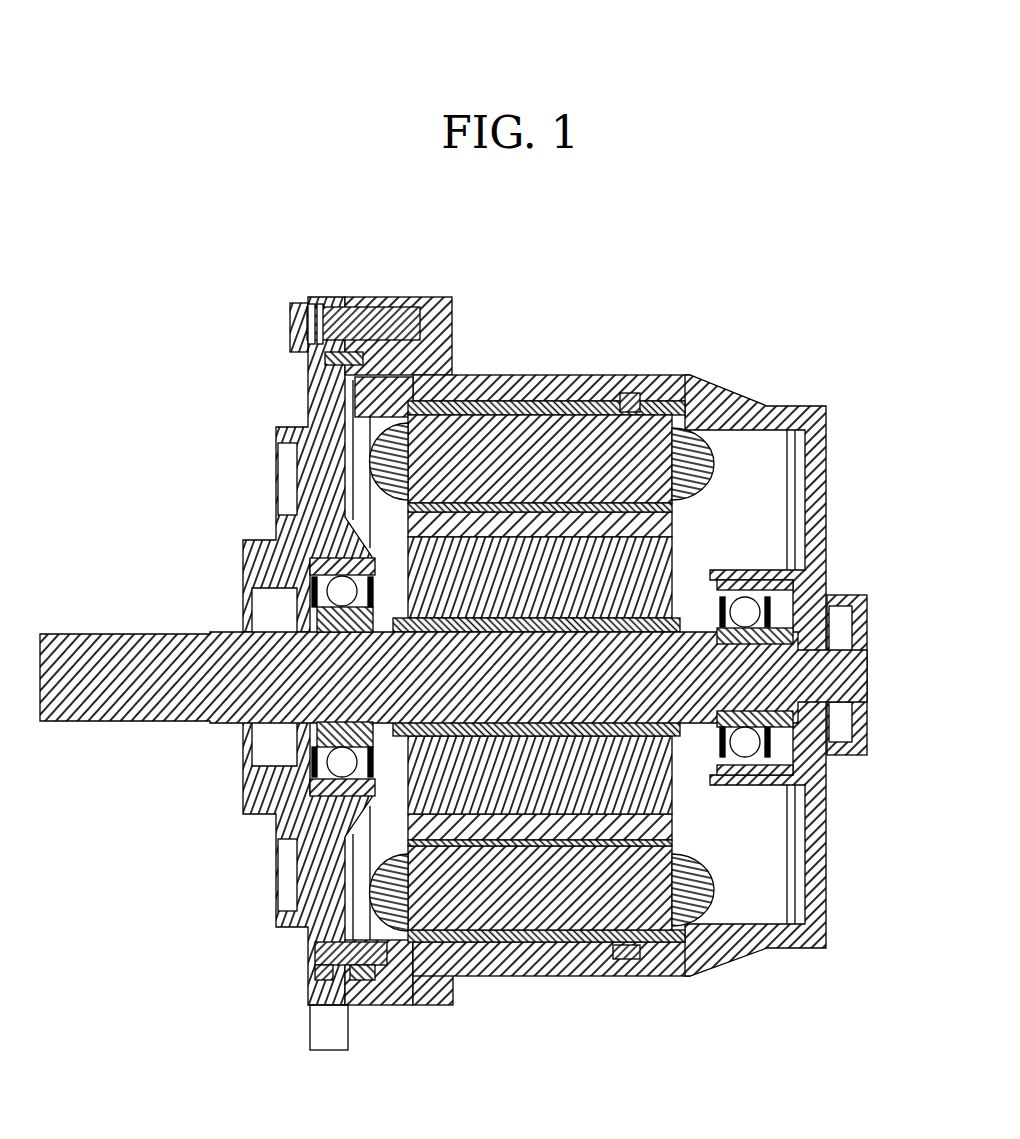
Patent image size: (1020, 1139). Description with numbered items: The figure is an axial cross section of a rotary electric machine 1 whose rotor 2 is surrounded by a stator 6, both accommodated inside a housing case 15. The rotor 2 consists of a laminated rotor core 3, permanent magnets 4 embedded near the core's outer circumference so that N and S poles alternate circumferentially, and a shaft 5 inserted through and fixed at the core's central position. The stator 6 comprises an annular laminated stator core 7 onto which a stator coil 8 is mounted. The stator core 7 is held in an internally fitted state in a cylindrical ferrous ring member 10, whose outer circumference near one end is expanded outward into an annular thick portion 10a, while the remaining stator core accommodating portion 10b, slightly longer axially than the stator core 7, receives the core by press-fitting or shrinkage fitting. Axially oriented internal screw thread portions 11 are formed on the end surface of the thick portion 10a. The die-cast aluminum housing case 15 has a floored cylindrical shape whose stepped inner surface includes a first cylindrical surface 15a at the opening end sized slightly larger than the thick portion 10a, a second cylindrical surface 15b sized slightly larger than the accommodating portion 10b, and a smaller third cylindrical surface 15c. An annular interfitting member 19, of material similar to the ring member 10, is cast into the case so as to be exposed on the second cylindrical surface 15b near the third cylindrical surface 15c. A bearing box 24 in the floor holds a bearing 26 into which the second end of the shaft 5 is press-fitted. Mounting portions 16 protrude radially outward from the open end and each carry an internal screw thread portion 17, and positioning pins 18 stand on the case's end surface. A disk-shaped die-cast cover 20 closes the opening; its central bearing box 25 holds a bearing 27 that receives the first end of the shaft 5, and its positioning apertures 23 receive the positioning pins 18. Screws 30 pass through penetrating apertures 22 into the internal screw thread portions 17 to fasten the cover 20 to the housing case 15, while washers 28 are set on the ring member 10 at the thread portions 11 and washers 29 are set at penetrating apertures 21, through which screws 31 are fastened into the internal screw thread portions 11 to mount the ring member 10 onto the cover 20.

The rotary electric machine 1 is at (125, 236).
The rotor 2 is at (477, 691).
The rotor core 3 is at (668, 795).
The permanent magnets 4 is at (668, 830).
The shaft 5 is at (805, 700).
The stator 6 is at (542, 739).
The stator core 7 is at (655, 928).
The stator coil 8 is at (694, 918).
The ring member 10 is at (431, 1021).
The thick portion 10a is at (387, 965).
The stator core accommodating portion 10b is at (395, 1055).
The internal screw thread portions 11 is at (362, 968).
The housing case 15 is at (589, 611).
The first cylindrical surface 15a is at (392, 383).
The second cylindrical surface 15b is at (523, 392).
The third cylindrical surface 15c is at (760, 430).
The mounting portions 16 is at (432, 310).
The internal screw thread portion 17 is at (362, 335).
The positioning pins 18 is at (322, 326).
The interfitting member 19 is at (632, 400).
The cover 20 is at (268, 419).
The penetrating apertures 21 is at (335, 1010).
The penetrating apertures 22 is at (312, 312).
The positioning apertures 23 is at (330, 360).
The bearing box 24 is at (745, 582).
The bearing box 25 is at (350, 548).
The bearing 26 is at (790, 620).
The bearing 27 is at (318, 590).
The washers 28 is at (355, 935).
The washers 29 is at (325, 980).
The screws 30 is at (292, 325).
The screws 31 is at (320, 957).